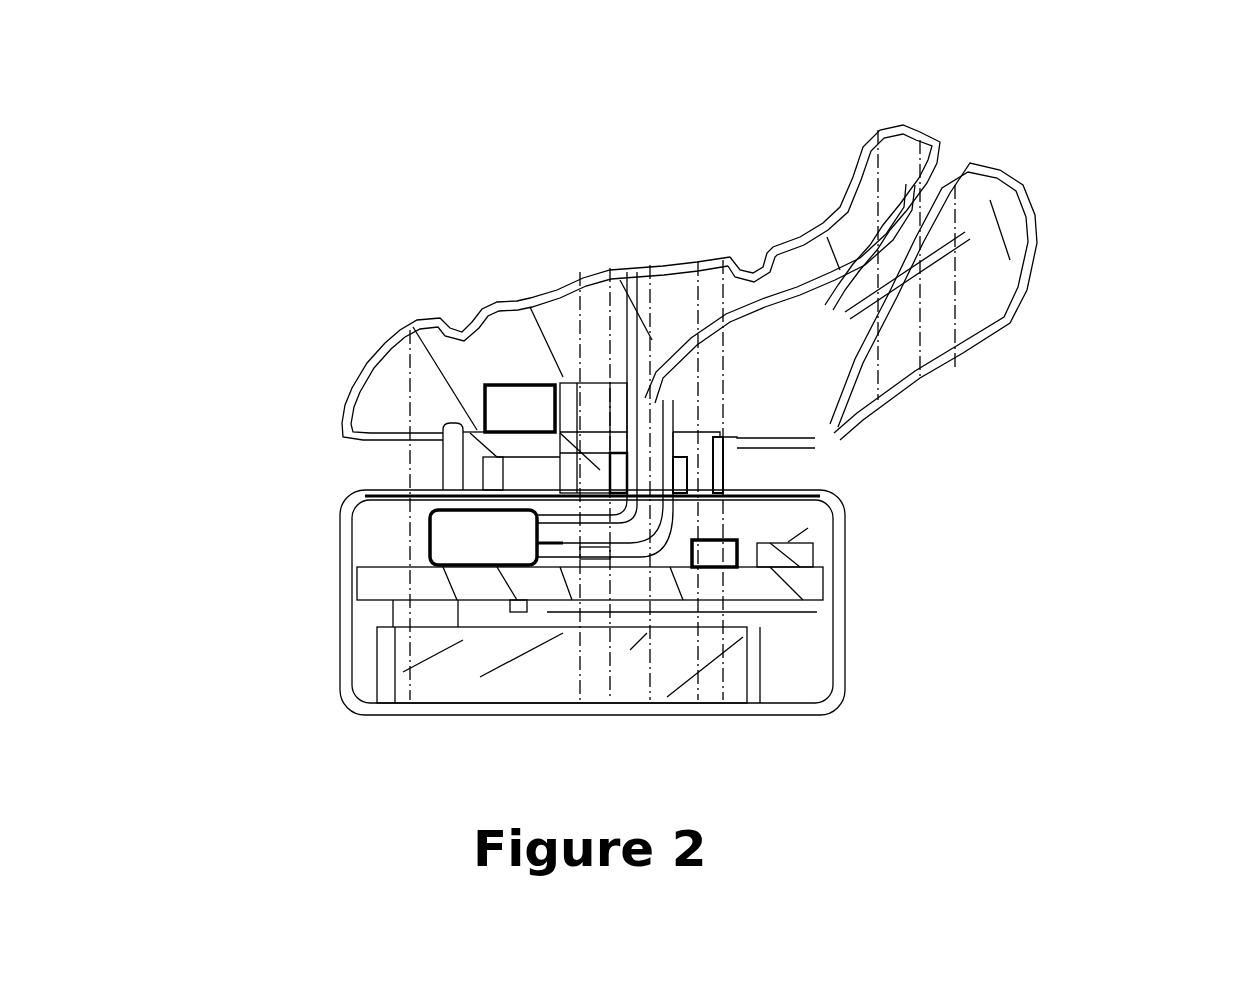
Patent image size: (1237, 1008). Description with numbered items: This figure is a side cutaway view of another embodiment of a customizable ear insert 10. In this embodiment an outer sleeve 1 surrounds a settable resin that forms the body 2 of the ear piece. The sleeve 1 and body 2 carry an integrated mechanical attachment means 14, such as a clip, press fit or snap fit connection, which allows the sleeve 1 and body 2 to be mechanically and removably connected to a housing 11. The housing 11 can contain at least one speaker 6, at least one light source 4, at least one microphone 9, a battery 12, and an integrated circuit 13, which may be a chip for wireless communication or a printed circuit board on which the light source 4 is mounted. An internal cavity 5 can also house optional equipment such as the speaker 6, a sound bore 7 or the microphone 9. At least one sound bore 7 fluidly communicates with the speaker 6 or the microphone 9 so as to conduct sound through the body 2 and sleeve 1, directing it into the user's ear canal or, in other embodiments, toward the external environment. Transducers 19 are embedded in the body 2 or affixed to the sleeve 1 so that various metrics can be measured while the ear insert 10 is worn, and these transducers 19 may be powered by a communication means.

The customizable ear insert 10 is at (435, 213).
The outer sleeve 1 is at (1030, 184).
The body 2 is at (1003, 283).
The light source 4 is at (825, 520).
The housing 11 is at (850, 543).
The sound bore 7 is at (640, 387).
The mechanical attachment means 14 is at (615, 472).
The transducers 19 is at (522, 383).
The speaker 6 is at (425, 530).
The integrated circuit 13 is at (645, 614).
The battery 12 is at (395, 668).
The microphone 9 is at (740, 553).
The internal cavity 5 is at (790, 663).